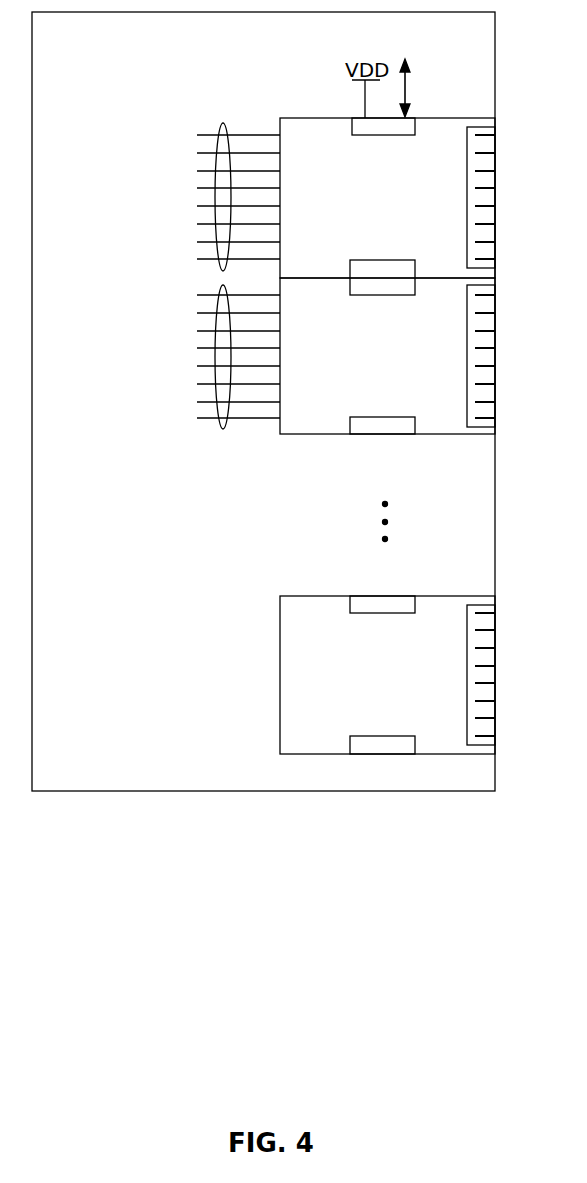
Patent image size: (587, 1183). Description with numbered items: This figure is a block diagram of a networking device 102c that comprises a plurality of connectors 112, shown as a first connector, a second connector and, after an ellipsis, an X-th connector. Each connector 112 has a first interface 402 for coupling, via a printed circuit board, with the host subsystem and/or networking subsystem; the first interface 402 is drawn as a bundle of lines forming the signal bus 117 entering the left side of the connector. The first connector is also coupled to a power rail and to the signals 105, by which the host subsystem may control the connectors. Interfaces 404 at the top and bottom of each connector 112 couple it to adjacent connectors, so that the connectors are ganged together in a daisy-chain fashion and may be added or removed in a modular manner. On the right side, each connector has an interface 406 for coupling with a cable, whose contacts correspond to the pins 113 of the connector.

The networking device 102c is at (263, 401).
The signals 105 is at (408, 92).
The connector 112 is at (387, 436).
The pins 113 is at (507, 259).
The signal bus 117 is at (183, 259).
The first interface 402 is at (210, 441).
The interfaces for coupling with other connectors 404 is at (386, 736).
The interface for coupling with a cable 406 is at (467, 676).